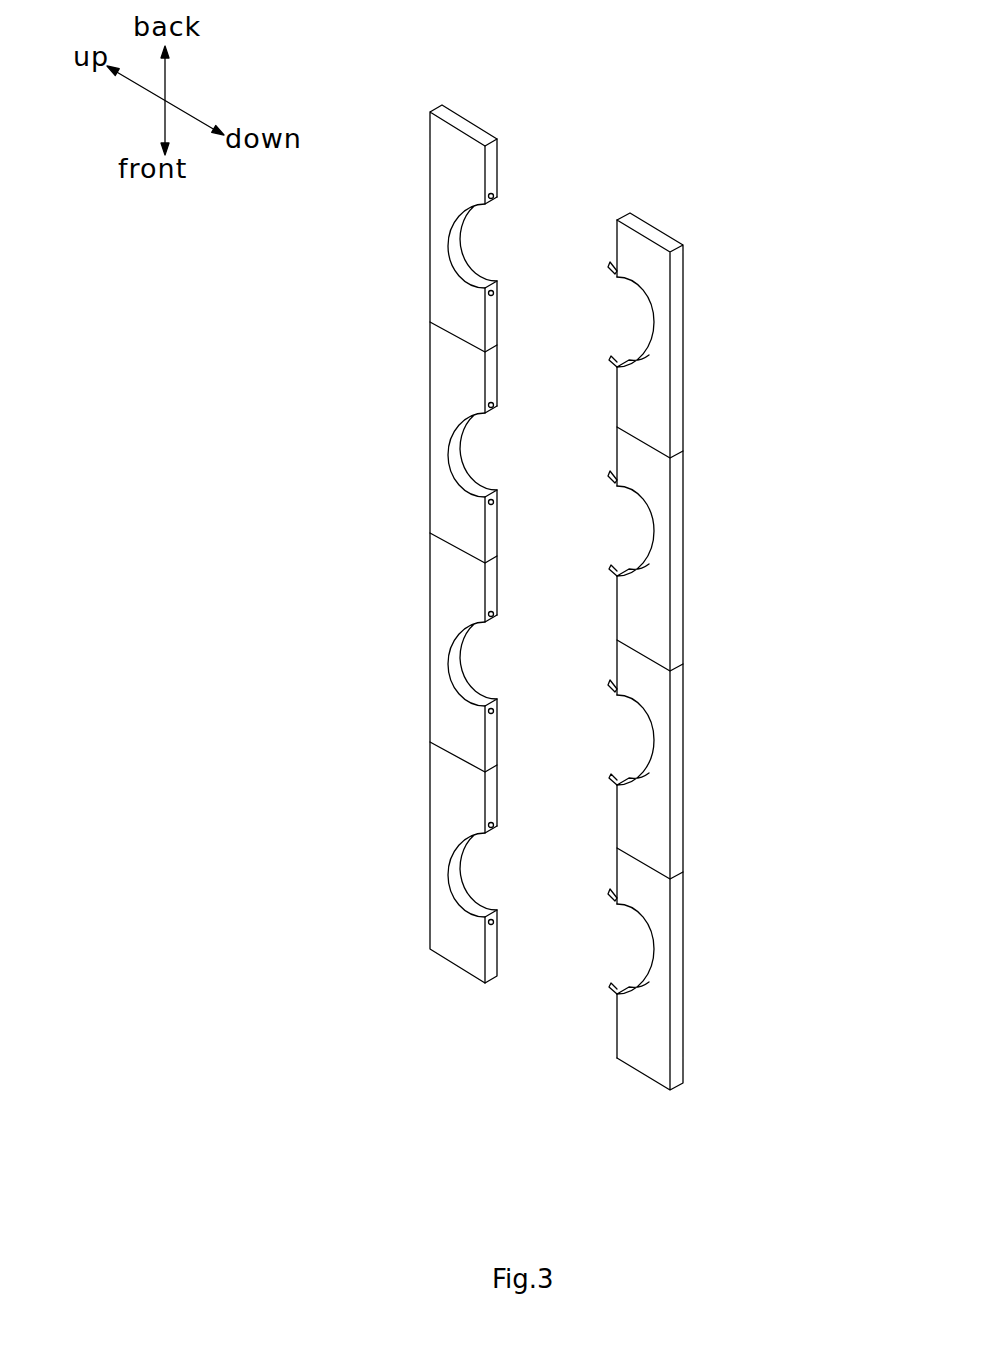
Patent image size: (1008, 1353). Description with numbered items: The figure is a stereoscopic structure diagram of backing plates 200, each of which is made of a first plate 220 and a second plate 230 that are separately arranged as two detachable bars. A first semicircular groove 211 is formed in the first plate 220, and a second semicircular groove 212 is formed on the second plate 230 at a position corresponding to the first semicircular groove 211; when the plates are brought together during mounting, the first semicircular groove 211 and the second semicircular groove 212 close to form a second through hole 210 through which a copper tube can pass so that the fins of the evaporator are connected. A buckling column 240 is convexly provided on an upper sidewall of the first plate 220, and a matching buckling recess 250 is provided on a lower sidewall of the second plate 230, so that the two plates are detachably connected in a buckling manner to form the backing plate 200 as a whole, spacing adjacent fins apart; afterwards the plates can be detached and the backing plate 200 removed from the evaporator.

The backing plate 200 is at (695, 65).
The second through hole 210 is at (222, 314).
The first semicircular groove 211 is at (637, 333).
The second semicircular groove 212 is at (460, 253).
The first plate 220 is at (623, 242).
The second plate 230 is at (462, 148).
The buckling column 240 is at (613, 686).
The buckling recess 250 is at (485, 613).